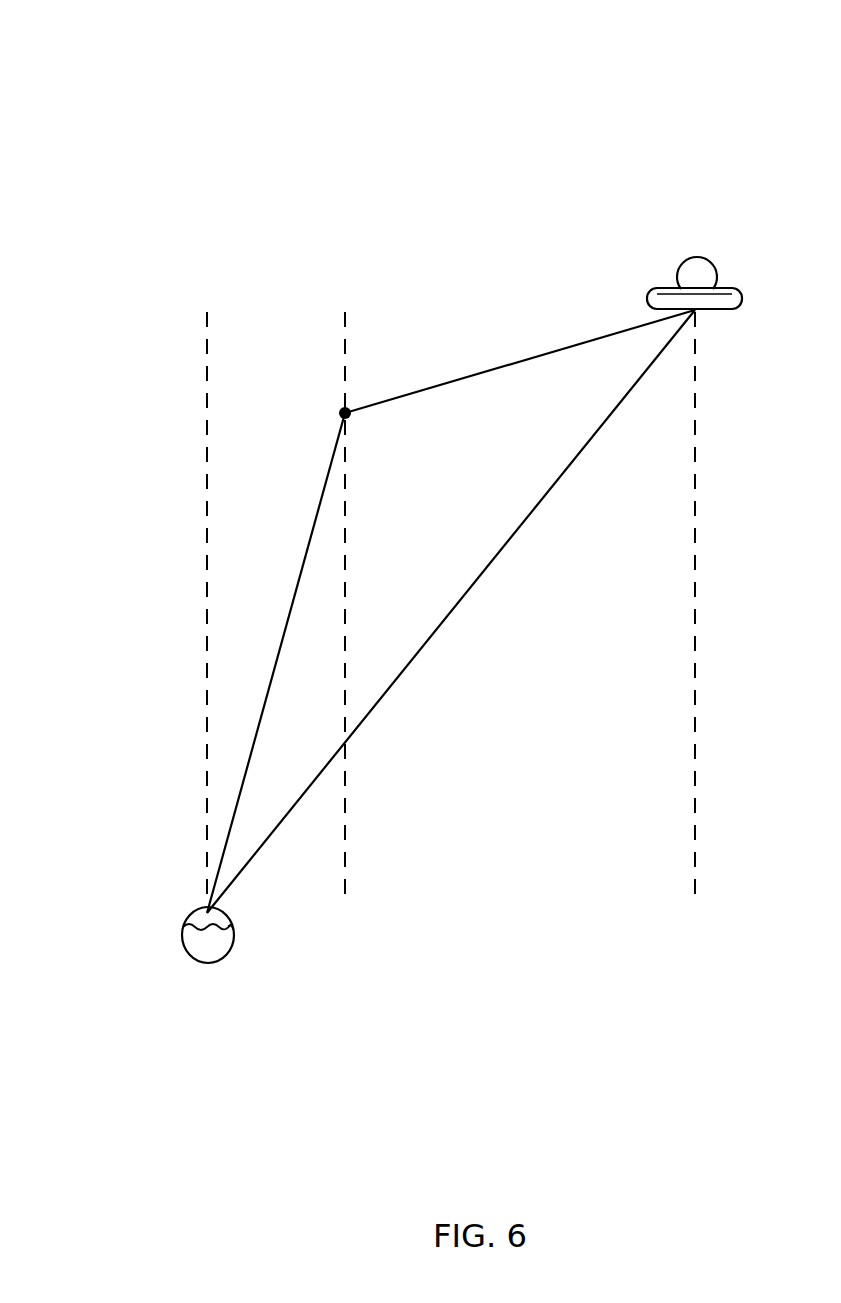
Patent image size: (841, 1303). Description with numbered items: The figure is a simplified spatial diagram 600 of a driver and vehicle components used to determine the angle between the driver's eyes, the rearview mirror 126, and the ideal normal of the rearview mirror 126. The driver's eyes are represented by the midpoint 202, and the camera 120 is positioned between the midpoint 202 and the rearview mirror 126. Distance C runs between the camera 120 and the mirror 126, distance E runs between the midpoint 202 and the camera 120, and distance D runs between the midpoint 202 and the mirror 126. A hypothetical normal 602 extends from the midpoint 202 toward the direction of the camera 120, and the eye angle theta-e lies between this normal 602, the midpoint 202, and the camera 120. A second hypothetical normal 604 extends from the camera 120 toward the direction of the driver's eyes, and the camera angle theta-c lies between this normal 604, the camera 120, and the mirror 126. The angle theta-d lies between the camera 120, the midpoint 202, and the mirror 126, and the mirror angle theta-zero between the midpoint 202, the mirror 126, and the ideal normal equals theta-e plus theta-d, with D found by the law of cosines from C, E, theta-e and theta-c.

The geometric diagram of viewing angles 600 is at (50, 99).
The hypothetical normal 602 is at (207, 443).
The hypothetical normal 604 is at (345, 340).
The camera 120 is at (341, 409).
The rearview mirror 126 is at (683, 268).
The midpoint 202 is at (203, 914).